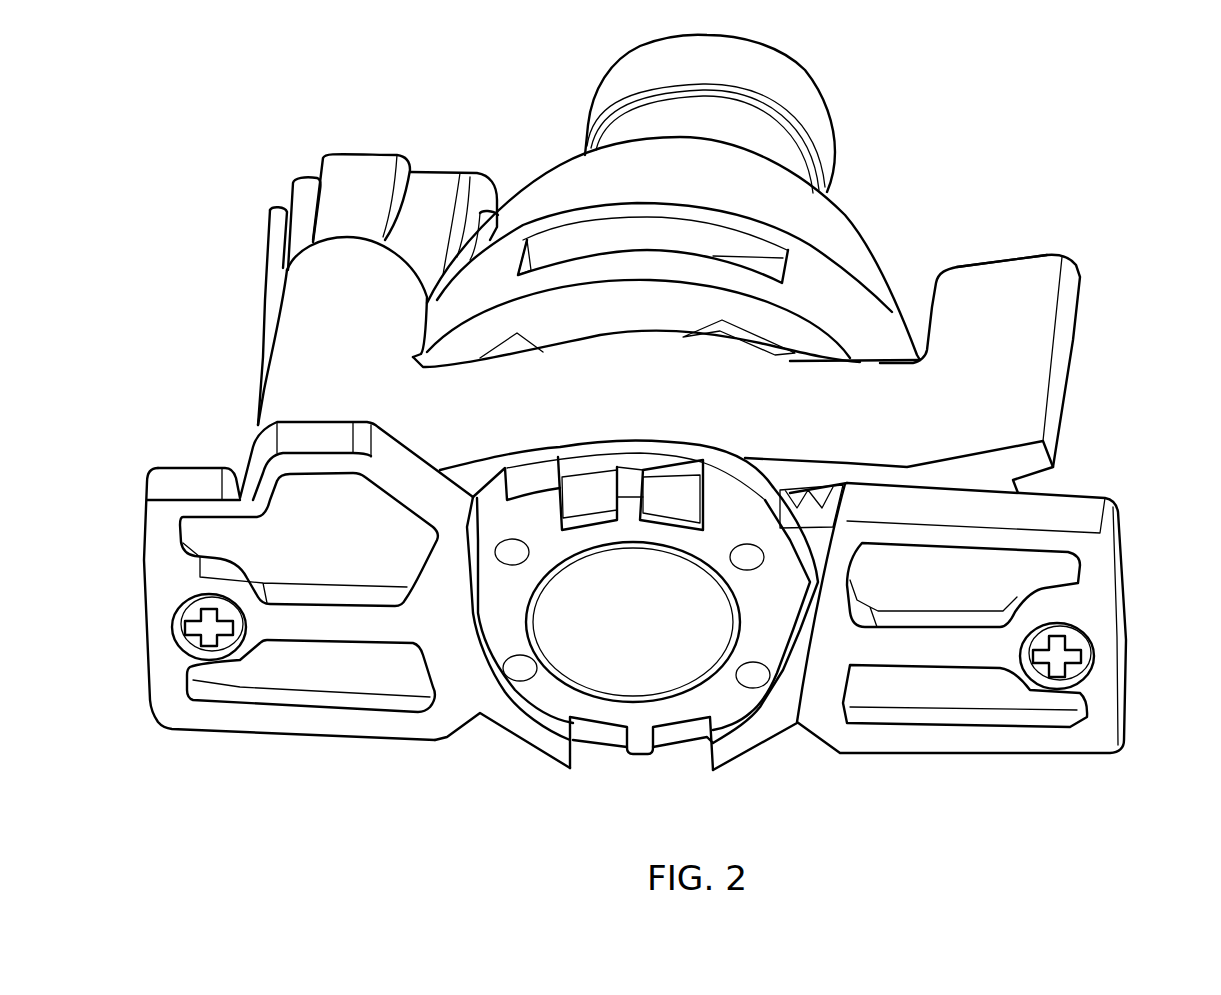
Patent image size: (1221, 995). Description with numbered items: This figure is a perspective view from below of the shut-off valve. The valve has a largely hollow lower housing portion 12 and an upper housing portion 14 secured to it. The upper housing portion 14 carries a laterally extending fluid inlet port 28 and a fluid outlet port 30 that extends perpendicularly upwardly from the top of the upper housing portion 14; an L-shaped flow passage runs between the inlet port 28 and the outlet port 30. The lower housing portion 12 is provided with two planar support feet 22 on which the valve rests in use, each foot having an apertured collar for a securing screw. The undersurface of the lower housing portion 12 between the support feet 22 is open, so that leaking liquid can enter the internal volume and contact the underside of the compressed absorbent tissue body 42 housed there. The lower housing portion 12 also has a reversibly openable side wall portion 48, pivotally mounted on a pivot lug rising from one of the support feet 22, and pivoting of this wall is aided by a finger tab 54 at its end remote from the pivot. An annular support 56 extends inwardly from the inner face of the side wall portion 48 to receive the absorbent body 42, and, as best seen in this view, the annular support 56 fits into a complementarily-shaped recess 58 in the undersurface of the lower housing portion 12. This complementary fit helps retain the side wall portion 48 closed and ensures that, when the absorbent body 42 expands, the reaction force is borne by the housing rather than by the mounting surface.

The lower housing portion 12 is at (350, 741).
The upper housing portion 14 is at (882, 194).
The support feet 22 is at (188, 480).
The fluid inlet port 28 is at (426, 195).
The fluid outlet port 30 is at (798, 99).
The absorbent compressed body 42 is at (633, 667).
The side wall portion 48 is at (971, 360).
The finger tab 54 is at (1045, 270).
The annular support 56 is at (737, 708).
The recess 58 is at (527, 705).